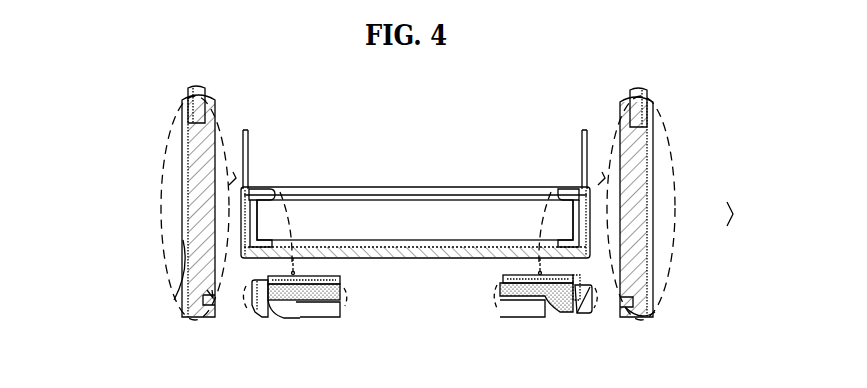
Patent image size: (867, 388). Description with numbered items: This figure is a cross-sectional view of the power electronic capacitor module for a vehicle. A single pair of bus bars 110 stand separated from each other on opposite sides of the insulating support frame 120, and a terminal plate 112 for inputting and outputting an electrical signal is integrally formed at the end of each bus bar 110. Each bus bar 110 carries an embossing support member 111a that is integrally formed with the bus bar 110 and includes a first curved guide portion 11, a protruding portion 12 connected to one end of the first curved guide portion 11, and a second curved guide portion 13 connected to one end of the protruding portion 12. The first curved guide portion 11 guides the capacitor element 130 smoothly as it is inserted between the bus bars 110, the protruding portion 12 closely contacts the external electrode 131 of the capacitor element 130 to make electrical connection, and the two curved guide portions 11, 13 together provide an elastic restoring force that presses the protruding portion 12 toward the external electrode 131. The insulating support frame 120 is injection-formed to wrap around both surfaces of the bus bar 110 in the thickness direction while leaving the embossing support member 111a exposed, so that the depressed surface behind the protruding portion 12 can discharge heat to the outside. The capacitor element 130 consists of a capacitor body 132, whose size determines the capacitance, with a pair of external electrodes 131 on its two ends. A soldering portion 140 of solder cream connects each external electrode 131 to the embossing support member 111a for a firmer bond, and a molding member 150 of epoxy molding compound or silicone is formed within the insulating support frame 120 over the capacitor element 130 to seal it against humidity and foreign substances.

The first curved guide portion 11 is at (206, 118).
The protruding portion 12 is at (215, 222).
The second curved guide portion 13 is at (213, 298).
The bus bar 110 is at (197, 165).
The embossing support member 111a is at (117, 238).
The terminal plate 112 is at (187, 93).
The insulating support frame 120 is at (697, 323).
The capacitor element 130 is at (345, 128).
The external electrode 131 is at (218, 141).
The capacitor body 132 is at (322, 199).
The soldering portion 140 is at (318, 294).
The molding member 150 is at (424, 195).